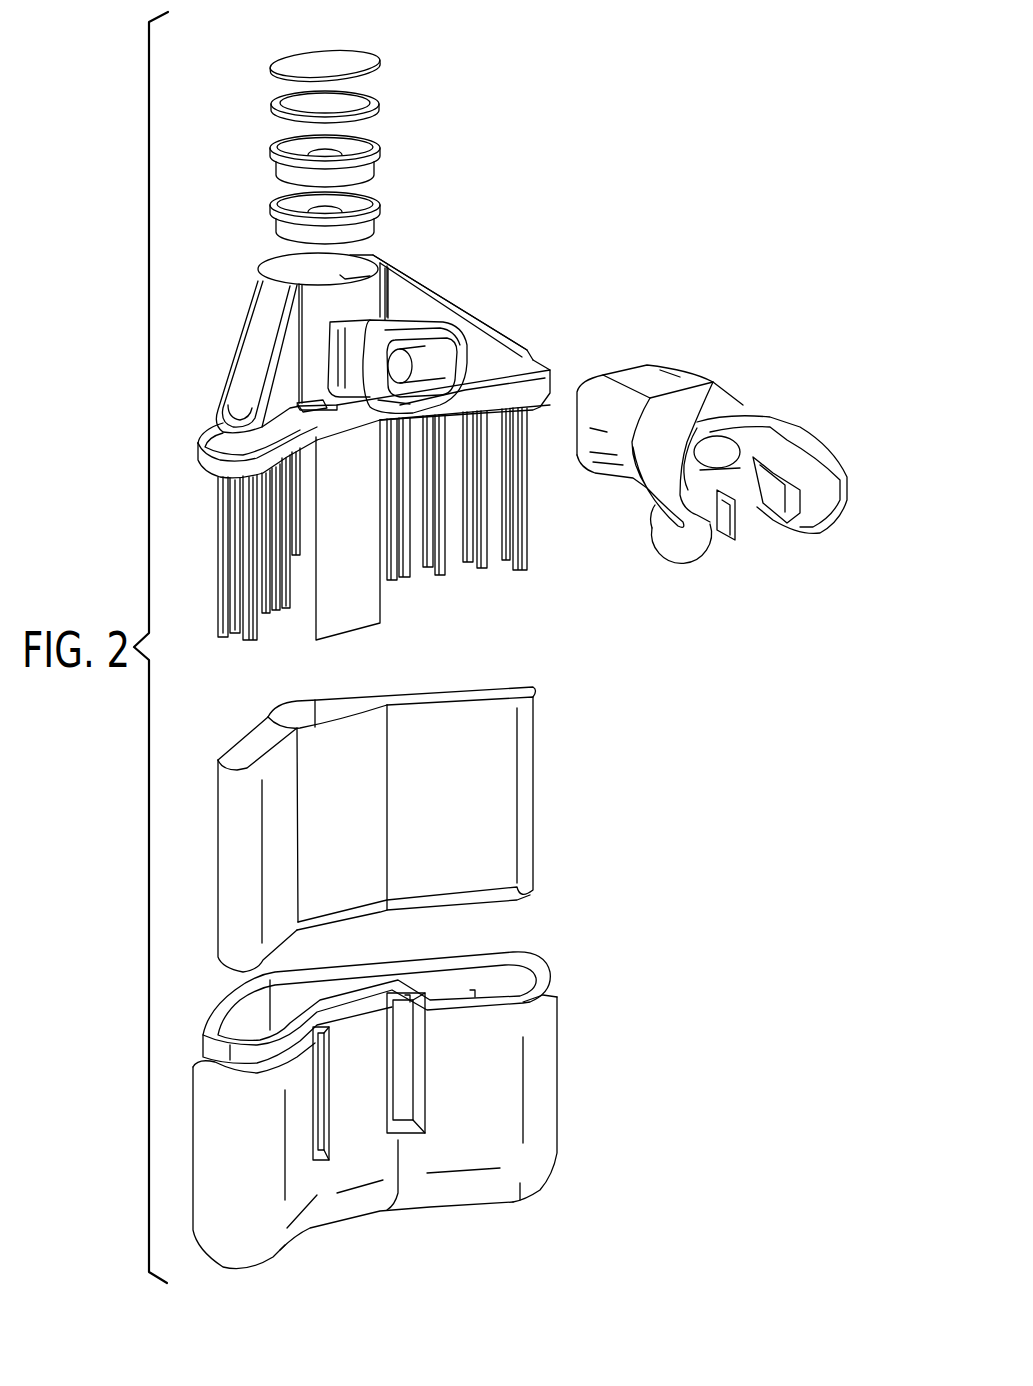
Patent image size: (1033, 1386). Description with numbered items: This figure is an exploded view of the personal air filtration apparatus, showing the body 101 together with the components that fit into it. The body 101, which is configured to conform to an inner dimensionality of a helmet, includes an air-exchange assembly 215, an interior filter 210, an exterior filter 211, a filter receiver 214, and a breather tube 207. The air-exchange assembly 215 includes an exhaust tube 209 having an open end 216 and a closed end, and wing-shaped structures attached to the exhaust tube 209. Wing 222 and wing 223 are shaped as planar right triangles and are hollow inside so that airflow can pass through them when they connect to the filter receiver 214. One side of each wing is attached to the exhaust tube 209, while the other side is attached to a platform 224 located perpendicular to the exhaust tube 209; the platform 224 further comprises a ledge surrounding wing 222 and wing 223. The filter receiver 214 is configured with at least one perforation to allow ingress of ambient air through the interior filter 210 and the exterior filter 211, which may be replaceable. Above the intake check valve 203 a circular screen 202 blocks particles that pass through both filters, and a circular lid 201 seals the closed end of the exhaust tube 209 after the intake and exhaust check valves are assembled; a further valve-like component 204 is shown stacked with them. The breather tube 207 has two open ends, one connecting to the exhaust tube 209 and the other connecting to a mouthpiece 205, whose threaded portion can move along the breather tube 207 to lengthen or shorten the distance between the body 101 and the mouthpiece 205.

The body 101 is at (208, 371).
The circular lid 201 is at (357, 52).
The circular screen 202 is at (367, 105).
The intake check valve 203 is at (373, 147).
The lower bushing 204 is at (372, 203).
The mouthpiece 205 is at (705, 415).
The breather tube 207 is at (418, 330).
The exhaust tube 209 is at (363, 300).
The interior filter 210 is at (533, 802).
The exterior filter 211 is at (557, 1097).
The filter receiver 214 is at (477, 560).
The air-exchange assembly 215 is at (530, 330).
The open end 216 is at (315, 618).
The wing 222 is at (265, 313).
The wing 223 is at (412, 303).
The platform 224 is at (213, 466).